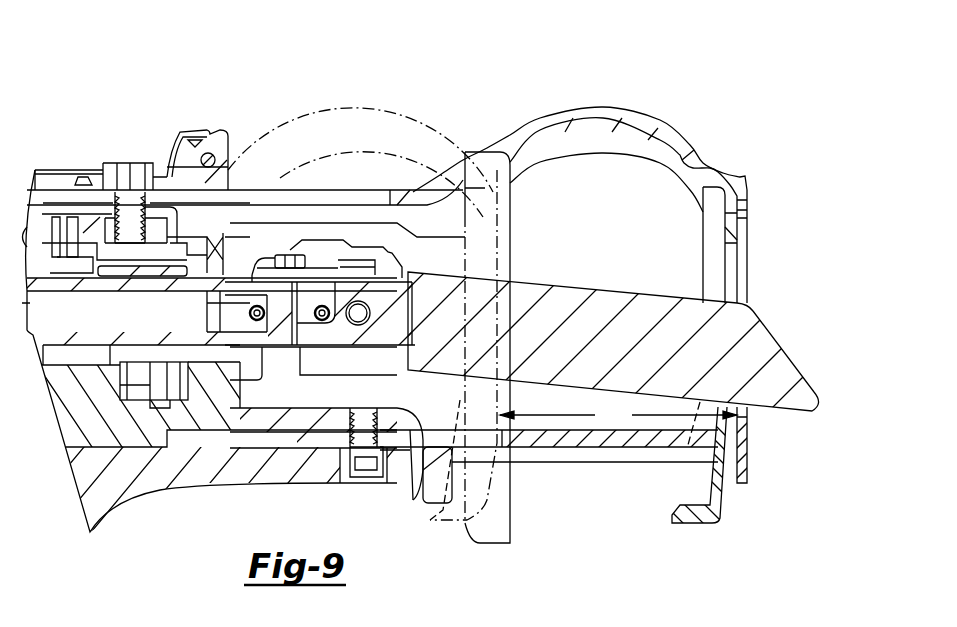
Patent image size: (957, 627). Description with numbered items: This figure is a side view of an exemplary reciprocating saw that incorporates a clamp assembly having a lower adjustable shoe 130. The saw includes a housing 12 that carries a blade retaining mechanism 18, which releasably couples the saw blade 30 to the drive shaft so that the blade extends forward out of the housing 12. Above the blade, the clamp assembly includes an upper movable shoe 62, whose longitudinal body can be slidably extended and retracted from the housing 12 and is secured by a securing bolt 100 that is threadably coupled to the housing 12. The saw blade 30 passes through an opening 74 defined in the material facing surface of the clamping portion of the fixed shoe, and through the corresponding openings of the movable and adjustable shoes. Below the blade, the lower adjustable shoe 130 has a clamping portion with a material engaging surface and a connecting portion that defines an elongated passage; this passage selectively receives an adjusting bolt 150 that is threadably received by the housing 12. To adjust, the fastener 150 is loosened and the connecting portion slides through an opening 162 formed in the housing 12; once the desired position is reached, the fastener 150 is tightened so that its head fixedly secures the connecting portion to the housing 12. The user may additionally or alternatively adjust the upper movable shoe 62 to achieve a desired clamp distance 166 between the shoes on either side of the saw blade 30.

The housing 12 is at (200, 482).
The blade retaining mechanism 18 is at (323, 247).
The saw blade 30 is at (615, 297).
The upper movable shoe 62 is at (608, 110).
The opening 74 is at (733, 265).
The securing bolt 100 is at (117, 170).
The lower adjustable shoe 130 is at (658, 455).
The adjusting bolt 150 is at (358, 467).
The opening 162 is at (413, 500).
The clamp distance 166 is at (618, 415).